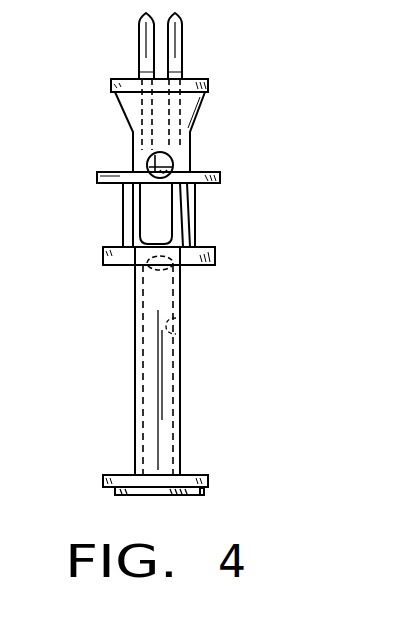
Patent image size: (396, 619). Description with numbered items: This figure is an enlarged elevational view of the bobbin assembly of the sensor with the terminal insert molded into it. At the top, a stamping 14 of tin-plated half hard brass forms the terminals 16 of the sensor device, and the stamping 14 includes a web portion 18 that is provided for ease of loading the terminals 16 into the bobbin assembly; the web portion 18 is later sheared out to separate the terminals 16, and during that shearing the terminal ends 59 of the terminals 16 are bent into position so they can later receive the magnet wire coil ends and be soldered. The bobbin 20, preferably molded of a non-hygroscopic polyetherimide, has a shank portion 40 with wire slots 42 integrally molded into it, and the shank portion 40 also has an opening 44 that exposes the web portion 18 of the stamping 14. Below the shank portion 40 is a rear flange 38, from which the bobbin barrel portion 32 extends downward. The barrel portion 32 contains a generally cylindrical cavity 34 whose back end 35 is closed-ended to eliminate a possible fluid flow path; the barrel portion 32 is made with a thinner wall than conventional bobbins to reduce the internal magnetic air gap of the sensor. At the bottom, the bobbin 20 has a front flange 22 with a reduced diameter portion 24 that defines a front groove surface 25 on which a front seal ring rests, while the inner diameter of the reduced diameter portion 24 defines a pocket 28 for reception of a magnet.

The terminals 16 is at (147, 42).
The stamping 14 is at (113, 102).
The shank portion 40 is at (188, 134).
The web portion 18 is at (174, 162).
The opening 44 is at (157, 153).
The terminal ends 59 is at (97, 180).
The wire slots 42 is at (127, 213).
The rear flange 38 is at (215, 262).
The back end 35 is at (147, 268).
The bobbin 20 is at (190, 365).
The bobbin barrel portion 32 is at (182, 425).
The cavity 34 is at (177, 328).
The front flange 22 is at (96, 491).
The reduced diameter portion 24 is at (127, 497).
The pocket 28 is at (182, 495).
The front groove surface 25 is at (204, 492).